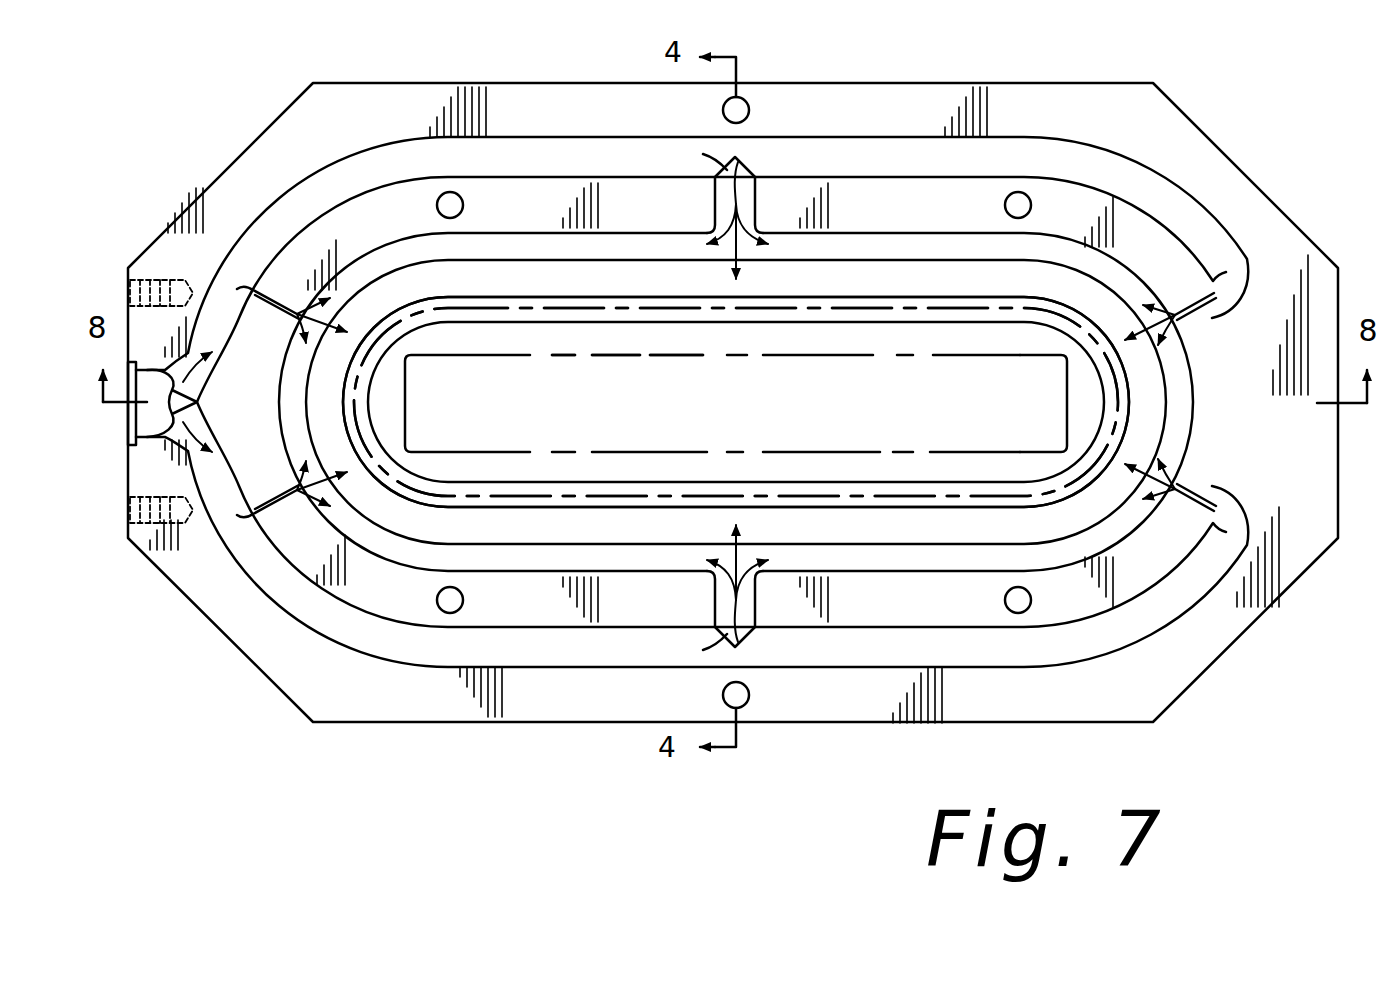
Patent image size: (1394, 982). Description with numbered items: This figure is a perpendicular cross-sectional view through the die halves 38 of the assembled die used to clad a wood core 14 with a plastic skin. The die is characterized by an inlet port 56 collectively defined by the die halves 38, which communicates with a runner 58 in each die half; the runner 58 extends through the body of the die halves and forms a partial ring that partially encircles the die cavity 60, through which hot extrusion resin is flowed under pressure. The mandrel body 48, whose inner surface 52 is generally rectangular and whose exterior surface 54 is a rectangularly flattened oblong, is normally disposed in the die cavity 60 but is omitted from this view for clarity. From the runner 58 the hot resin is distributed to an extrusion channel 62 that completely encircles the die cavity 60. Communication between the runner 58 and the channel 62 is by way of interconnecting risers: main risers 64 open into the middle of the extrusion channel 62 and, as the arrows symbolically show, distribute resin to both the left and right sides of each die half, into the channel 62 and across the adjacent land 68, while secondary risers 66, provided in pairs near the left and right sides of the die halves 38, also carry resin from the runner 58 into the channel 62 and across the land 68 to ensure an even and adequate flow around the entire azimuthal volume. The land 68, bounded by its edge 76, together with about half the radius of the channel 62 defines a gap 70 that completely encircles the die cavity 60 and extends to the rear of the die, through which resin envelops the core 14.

The die half 38 is at (1153, 140).
The runner 58 is at (497, 647).
The inlet port 56 is at (135, 420).
The extrusion channel 62 is at (862, 247).
The land 68 is at (945, 277).
The edge of land 76 is at (830, 297).
The gap 70 is at (407, 493).
The mandrel body 48 is at (437, 312).
The exterior surface of mandrel body 54 is at (684, 312).
The inner surface of mandrel body 52 is at (497, 322).
The die cavity 60 is at (736, 419).
The wood core 14 is at (637, 403).
The main riser 64 is at (762, 192).
The secondary riser 66 is at (278, 292).